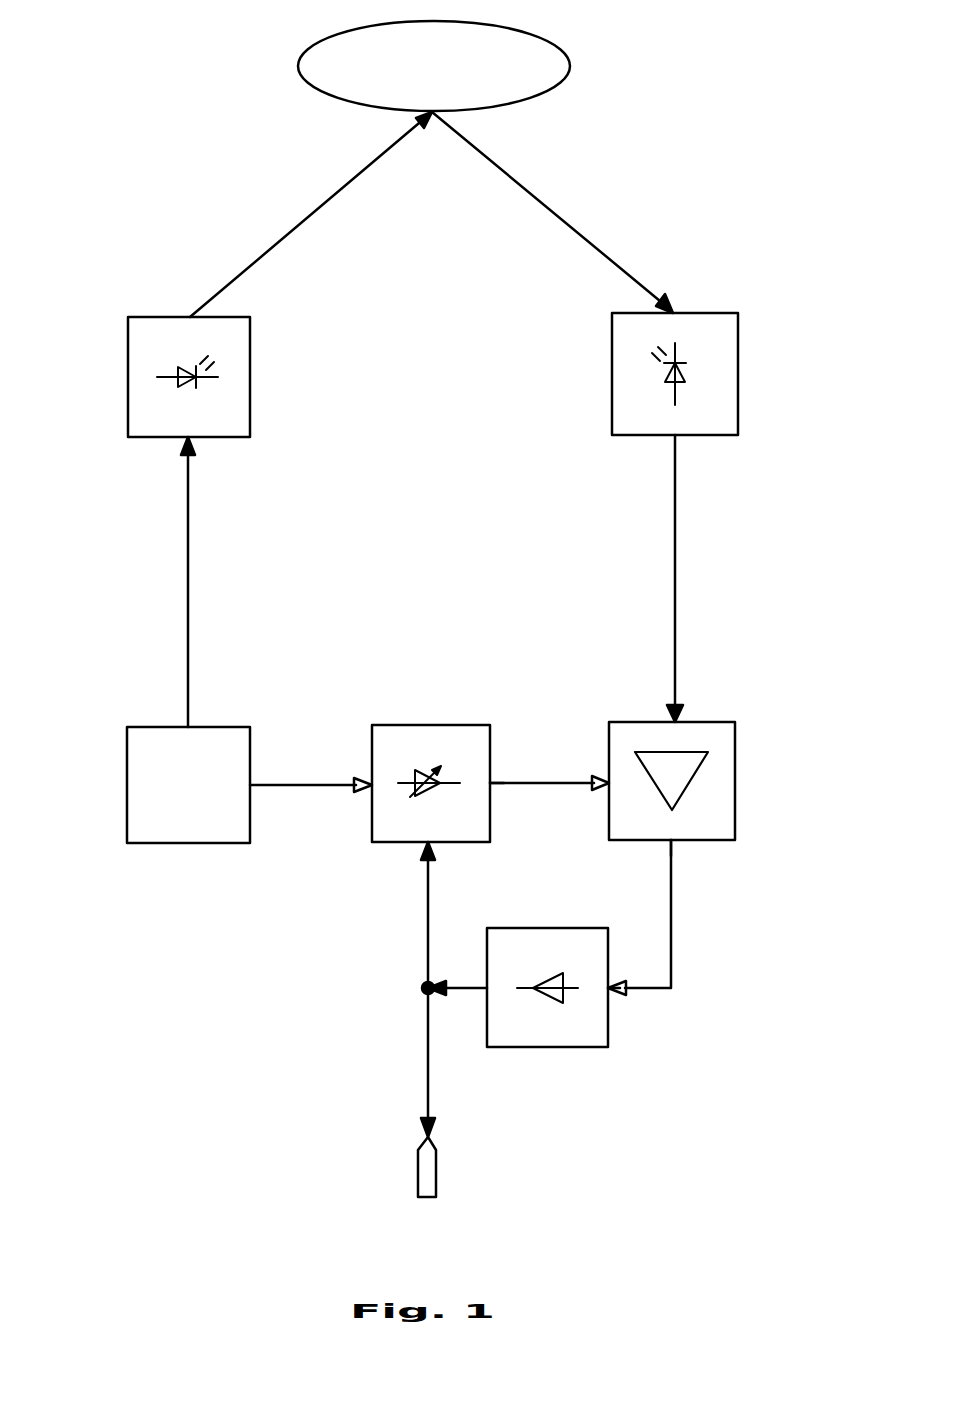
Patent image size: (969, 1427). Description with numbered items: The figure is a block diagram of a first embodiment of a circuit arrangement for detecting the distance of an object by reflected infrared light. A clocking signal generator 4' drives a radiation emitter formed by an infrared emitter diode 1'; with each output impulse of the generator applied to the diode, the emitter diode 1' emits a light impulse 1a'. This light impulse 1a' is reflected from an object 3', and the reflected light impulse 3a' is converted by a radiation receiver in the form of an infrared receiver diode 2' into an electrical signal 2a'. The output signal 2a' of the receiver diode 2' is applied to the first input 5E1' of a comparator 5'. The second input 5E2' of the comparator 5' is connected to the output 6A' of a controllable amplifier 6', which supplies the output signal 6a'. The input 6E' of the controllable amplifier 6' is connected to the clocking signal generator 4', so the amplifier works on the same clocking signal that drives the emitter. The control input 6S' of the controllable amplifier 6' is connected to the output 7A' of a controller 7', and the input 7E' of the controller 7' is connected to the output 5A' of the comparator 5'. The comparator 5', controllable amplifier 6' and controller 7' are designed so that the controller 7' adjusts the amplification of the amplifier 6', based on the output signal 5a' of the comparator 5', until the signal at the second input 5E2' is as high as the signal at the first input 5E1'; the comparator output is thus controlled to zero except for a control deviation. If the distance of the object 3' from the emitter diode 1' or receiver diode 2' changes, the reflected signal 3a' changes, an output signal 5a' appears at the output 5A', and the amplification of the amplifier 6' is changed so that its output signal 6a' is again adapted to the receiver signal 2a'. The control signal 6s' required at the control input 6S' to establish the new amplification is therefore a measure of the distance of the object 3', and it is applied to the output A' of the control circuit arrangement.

The infrared emitter diode 1' is at (241, 359).
The light impulse 1a' is at (311, 214).
The infrared receiver diode 2' is at (708, 344).
The electrical signal 2a' is at (620, 573).
The object 3' is at (470, 56).
The reflected light impulse 3a' is at (562, 212).
The clocking signal generator 4' is at (168, 640).
The comparator 5' is at (650, 752).
The first input of the comparator 5E1' is at (714, 693).
The second input of the comparator 5E2' is at (562, 812).
The output of the comparator 5A' is at (624, 872).
The output signal of the comparator 5a' is at (686, 917).
The controllable amplifier 6' is at (431, 753).
The input of the controllable amplifier 6E' is at (311, 814).
The output of the controllable amplifier 6A' is at (526, 743).
The output signal of the controllable amplifier 6a' is at (542, 758).
The control input of the controllable amplifier 6S' is at (383, 873).
The control signal 6s' is at (387, 996).
The controller 7' is at (567, 1023).
The input of the controller 7E' is at (660, 1014).
The output of the controller 7A' is at (459, 1031).
The output of the control circuit arrangement A' is at (373, 1170).